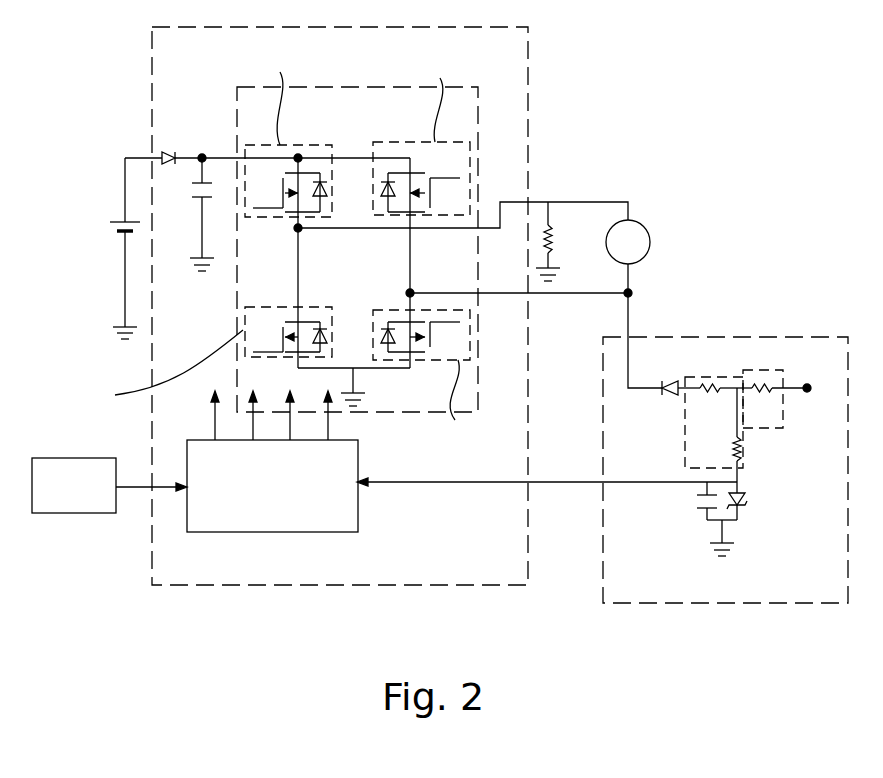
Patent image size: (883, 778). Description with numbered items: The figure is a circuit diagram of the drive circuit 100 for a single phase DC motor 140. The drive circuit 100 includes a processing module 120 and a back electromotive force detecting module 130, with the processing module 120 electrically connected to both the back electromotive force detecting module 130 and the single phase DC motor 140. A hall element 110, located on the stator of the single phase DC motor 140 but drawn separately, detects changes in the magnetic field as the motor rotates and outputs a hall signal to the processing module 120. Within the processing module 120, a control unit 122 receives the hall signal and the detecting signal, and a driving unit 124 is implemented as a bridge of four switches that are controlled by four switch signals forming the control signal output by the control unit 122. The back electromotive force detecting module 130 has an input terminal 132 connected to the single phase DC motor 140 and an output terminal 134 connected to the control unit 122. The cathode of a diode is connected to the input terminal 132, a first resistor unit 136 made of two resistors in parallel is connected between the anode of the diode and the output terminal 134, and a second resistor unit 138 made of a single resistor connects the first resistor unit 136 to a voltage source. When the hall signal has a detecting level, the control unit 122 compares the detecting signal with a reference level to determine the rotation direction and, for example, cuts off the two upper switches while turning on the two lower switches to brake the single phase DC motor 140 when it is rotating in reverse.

The drive circuit 100 is at (62, 608).
The hall element 110 is at (96, 500).
The processing module 120 is at (528, 43).
The control unit 122 is at (294, 505).
The driving unit 124 is at (478, 137).
The back electromotive force detecting module 130 is at (681, 588).
The input terminal 132 is at (630, 335).
The output terminal 134 is at (602, 480).
The resistor unit 136 is at (712, 372).
The resistor unit 138 is at (773, 370).
The single phase DC motor 140 is at (641, 222).